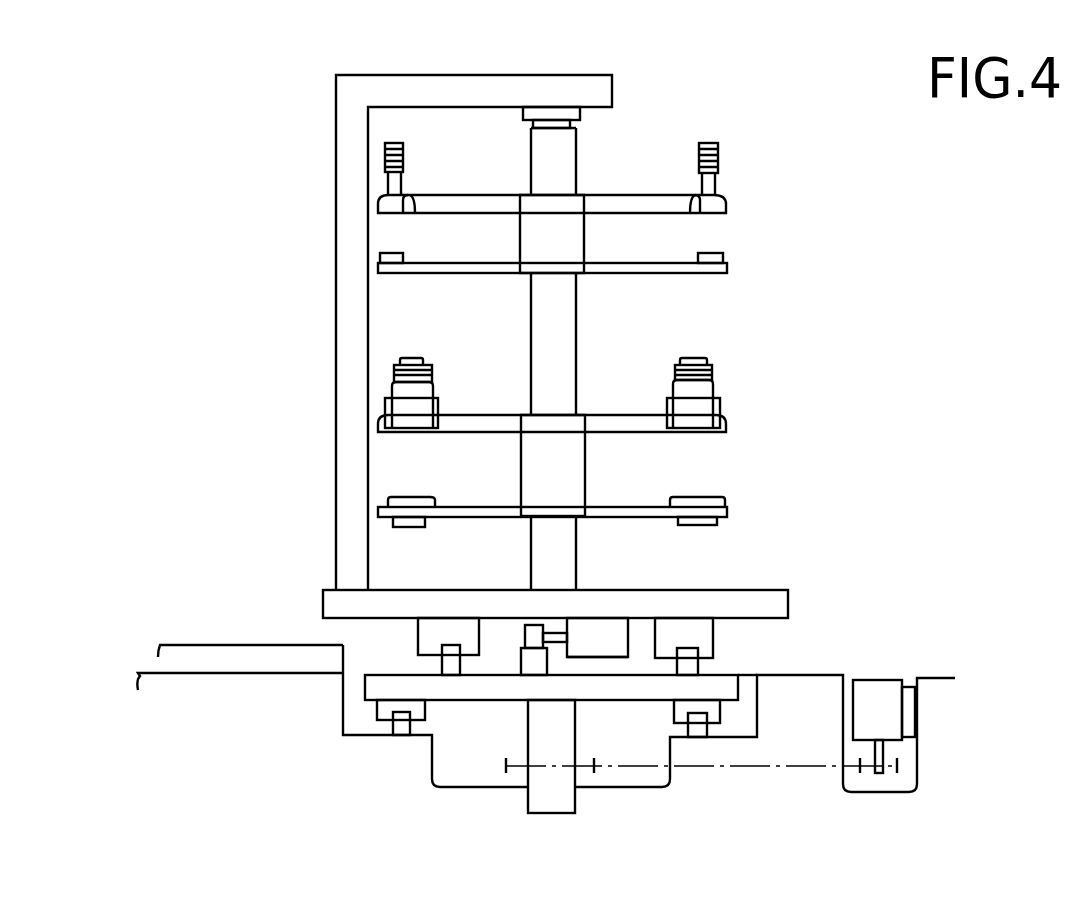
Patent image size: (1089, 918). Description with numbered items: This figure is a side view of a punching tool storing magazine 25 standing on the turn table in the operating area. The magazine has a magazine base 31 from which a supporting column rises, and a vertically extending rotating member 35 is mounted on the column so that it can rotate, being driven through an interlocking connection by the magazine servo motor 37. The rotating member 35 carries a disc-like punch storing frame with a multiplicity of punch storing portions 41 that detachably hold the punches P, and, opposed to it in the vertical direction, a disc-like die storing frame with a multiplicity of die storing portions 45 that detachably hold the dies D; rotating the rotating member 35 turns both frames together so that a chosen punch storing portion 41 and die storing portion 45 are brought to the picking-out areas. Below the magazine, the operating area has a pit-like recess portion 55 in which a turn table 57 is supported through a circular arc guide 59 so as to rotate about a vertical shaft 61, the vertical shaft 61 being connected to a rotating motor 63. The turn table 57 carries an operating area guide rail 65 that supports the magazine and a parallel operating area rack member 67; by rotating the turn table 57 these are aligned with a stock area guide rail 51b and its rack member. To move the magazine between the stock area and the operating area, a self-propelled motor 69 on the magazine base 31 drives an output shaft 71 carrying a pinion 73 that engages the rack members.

The punching tool storing magazine 25 is at (783, 272).
The magazine base 31 is at (752, 592).
The rotating member 35 is at (578, 351).
The magazine servo motor 37 is at (337, 250).
The punch storing portion 41 is at (405, 195).
The die storing portion 45 is at (405, 260).
The punch P is at (405, 153).
The die D is at (403, 255).
The stock area guide rail 51b is at (203, 645).
The recess portion 55 is at (757, 700).
The turn table 57 is at (453, 703).
The circular arc guide 59 is at (397, 736).
The vertical shaft 61 is at (577, 745).
The rotating motor 63 is at (873, 680).
The operating area guide rail 65 is at (443, 666).
The operating area rack member 67 is at (522, 663).
The self-propelled motor 69 is at (600, 657).
The output shaft 71 is at (558, 628).
The pinion 73 is at (523, 633).